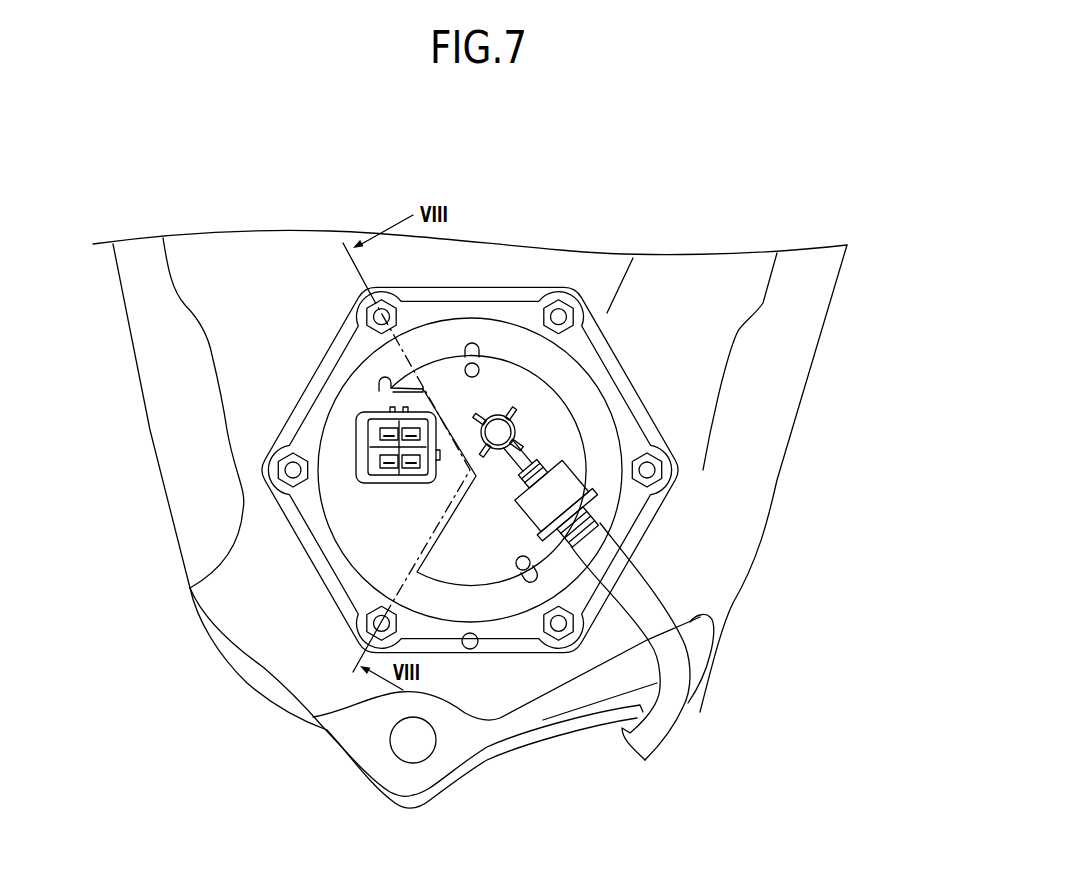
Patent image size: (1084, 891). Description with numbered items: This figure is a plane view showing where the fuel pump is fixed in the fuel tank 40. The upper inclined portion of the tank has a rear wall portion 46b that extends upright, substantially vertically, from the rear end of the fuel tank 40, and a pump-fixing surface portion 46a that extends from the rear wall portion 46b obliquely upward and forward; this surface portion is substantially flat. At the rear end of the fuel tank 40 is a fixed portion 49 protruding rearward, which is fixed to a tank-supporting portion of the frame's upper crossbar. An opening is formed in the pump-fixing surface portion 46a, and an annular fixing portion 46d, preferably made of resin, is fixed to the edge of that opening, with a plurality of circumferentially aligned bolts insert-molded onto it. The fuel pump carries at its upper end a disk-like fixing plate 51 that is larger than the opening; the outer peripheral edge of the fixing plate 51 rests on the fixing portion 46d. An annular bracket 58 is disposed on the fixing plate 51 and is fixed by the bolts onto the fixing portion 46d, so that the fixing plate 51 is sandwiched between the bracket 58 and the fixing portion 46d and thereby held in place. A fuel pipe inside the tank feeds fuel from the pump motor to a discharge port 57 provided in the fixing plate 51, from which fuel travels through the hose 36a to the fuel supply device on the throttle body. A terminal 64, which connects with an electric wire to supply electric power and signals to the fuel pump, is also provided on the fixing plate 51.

The fuel tank 40 is at (838, 281).
The pump-fixing surface portion 46a is at (653, 357).
The rear wall portion 46b is at (497, 719).
The annular fixing portion 46d is at (603, 347).
The fixed portion 49 is at (417, 782).
The fixing plate 51 is at (553, 430).
The discharge port 57 is at (512, 458).
The annular bracket 58 is at (588, 400).
The terminal 64 is at (393, 466).
The hose 36a is at (682, 667).